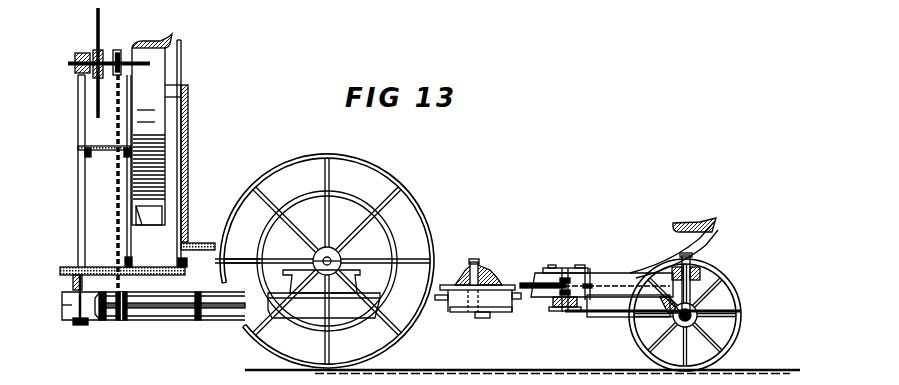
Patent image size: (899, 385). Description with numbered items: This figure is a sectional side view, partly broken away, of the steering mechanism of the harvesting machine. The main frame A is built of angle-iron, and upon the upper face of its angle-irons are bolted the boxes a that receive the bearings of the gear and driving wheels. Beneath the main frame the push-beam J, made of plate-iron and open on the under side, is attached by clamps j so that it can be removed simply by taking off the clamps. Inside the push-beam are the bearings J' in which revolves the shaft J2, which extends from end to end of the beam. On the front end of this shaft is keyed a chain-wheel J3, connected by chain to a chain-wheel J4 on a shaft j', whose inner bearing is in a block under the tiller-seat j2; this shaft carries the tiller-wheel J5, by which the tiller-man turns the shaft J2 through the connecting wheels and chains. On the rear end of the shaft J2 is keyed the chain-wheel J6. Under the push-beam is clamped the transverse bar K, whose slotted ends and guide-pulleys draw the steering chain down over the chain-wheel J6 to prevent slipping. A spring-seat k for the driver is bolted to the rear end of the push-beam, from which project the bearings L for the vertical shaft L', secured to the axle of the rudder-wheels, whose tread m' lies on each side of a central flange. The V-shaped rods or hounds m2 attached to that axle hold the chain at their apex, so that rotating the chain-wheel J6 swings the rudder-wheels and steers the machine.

The shaft j' is at (92, 59).
The tiller-wheel J5 is at (94, 53).
The chain-wheel J4 is at (121, 50).
The tiller-seat j2 is at (167, 37).
The main frame A is at (60, 271).
The push-beam J is at (270, 303).
The clamps j is at (79, 315).
The bearings J' is at (355, 294).
The chain-wheel J3 is at (128, 320).
The shaft J2 is at (157, 308).
The boxes a is at (341, 258).
The chain-wheel J6 is at (558, 290).
The transverse bar K is at (555, 312).
The rods or hounds m2 is at (602, 318).
The spring-seat k is at (712, 217).
The vertical shaft L' is at (706, 273).
The bearings L is at (716, 284).
The tread m' is at (689, 315).